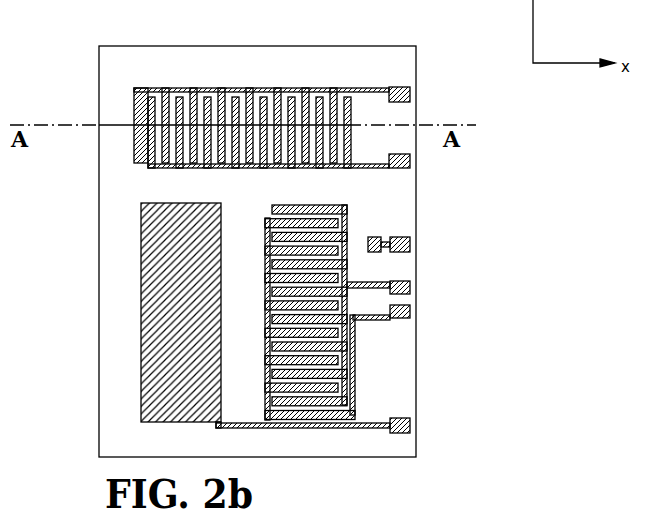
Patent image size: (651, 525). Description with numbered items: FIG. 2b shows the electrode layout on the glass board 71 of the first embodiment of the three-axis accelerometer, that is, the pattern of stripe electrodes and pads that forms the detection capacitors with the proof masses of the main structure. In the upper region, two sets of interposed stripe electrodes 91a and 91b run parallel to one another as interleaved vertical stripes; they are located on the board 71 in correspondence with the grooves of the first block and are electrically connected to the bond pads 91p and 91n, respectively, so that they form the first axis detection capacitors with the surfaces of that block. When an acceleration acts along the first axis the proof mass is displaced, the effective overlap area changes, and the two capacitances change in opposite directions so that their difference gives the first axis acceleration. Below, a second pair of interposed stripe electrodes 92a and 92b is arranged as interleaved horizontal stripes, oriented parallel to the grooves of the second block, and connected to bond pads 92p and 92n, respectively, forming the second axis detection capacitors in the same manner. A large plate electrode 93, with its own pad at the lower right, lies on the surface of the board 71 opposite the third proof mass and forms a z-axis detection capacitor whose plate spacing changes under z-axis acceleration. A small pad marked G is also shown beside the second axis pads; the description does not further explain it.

The board 71 is at (402, 67).
The stripe electrodes 91a is at (262, 98).
The stripe electrodes 91b is at (318, 92).
The bond pad 91n is at (412, 94).
The bond pad 91p is at (412, 165).
The stripe electrodes 92a is at (356, 323).
The stripe electrodes 92b is at (356, 362).
The bond pad 92n is at (412, 316).
The bond pad 92p is at (412, 287).
The electrode 93 is at (148, 300).
The ground pad G is at (412, 244).